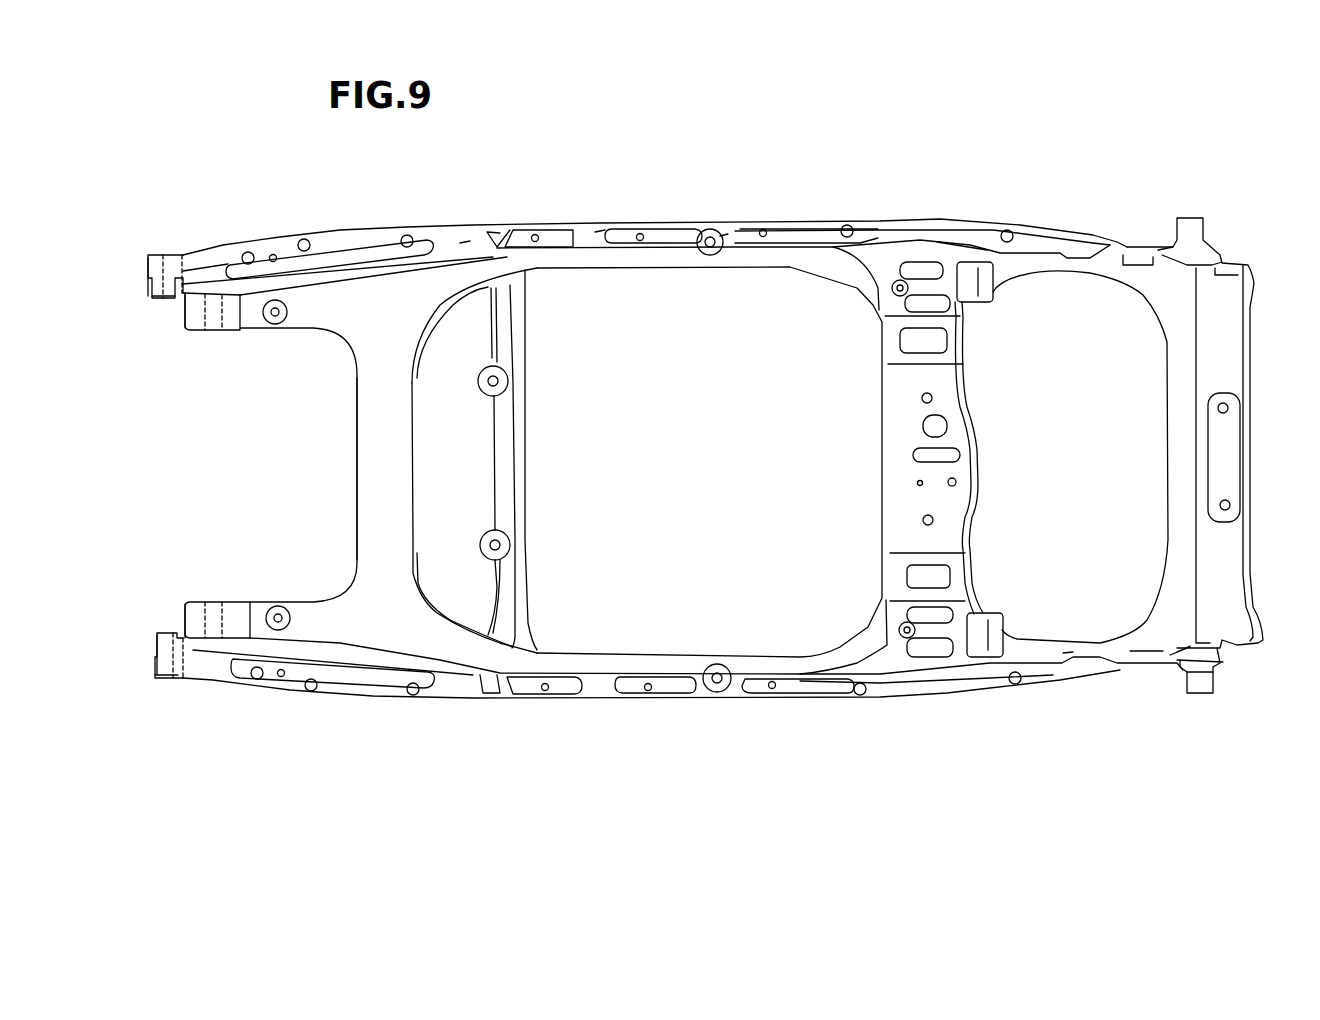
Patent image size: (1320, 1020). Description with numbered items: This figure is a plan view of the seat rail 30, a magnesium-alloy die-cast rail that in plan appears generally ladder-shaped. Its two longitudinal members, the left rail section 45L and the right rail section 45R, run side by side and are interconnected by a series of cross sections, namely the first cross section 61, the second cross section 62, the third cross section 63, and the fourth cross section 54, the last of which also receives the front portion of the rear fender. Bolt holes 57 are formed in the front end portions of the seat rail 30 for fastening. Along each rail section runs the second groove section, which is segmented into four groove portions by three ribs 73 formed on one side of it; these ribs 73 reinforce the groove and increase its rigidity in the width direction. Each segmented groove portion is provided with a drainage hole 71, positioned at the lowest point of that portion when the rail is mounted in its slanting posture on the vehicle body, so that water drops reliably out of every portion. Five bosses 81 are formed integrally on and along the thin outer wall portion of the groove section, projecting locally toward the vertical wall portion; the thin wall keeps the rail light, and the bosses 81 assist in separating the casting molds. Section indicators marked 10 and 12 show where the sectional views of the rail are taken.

The seat rail 30 is at (878, 193).
The right rail section 45R is at (592, 227).
The left rail section 45L is at (621, 704).
The fourth cross section 54 is at (1182, 471).
The bolt holes 57 is at (175, 262).
The first cross section 61 is at (373, 462).
The second cross section 62 is at (505, 462).
The third cross section 63 is at (890, 462).
The drainage hole 71 is at (535, 236).
The ribs 73 is at (470, 240).
The bosses 81 is at (248, 255).
The section line of FIG. 10 is at (547, 646).
The section line of FIG. 12 is at (252, 214).